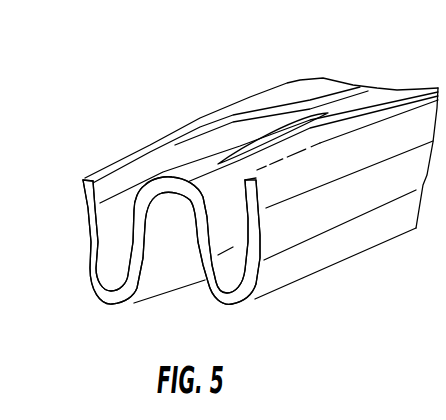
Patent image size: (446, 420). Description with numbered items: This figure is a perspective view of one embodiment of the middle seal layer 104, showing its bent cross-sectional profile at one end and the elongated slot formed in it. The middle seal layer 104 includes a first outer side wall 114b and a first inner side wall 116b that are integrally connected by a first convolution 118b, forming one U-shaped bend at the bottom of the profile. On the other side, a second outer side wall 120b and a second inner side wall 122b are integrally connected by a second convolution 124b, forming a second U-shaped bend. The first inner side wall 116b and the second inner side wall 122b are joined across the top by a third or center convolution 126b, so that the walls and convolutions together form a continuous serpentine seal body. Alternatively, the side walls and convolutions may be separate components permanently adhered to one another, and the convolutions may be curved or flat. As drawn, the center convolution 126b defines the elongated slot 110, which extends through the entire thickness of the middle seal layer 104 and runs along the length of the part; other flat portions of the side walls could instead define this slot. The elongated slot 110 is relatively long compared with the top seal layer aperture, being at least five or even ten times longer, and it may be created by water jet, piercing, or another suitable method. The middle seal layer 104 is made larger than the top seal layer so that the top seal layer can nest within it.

The middle seal layer 104 is at (102, 45).
The elongated slot 110 is at (268, 137).
The first outer side wall 114b is at (90, 202).
The first inner side wall 116b is at (134, 216).
The first convolution 118b is at (113, 303).
The second outer side wall 120b is at (253, 226).
The second inner side wall 122b is at (205, 270).
The second convolution 124b is at (222, 305).
The center convolution 126b is at (199, 166).